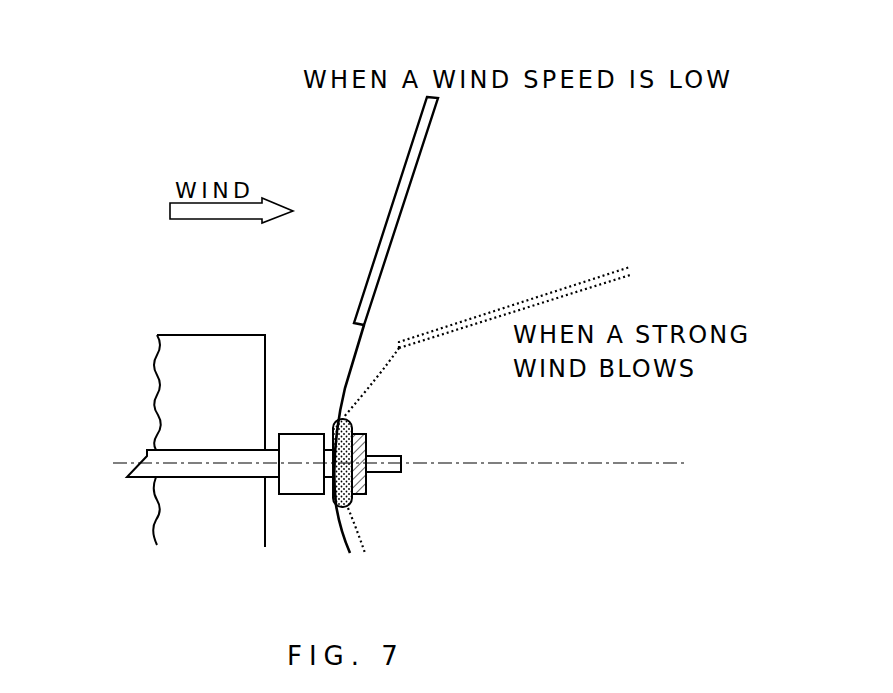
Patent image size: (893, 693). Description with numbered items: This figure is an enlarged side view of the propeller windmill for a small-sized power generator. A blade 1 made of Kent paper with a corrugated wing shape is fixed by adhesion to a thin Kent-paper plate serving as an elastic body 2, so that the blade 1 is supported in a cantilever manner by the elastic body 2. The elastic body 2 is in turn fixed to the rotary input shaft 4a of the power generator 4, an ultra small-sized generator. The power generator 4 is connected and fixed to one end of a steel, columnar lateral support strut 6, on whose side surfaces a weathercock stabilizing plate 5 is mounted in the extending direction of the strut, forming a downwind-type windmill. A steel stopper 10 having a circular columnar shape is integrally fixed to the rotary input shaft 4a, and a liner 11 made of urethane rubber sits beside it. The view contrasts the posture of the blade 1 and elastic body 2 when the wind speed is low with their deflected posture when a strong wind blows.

The blade 1 is at (532, 305).
The elastic body 2 is at (357, 407).
The power generator 4 is at (301, 480).
The rotary input shaft 4a is at (383, 466).
The weathercock stabilizing plate 5 is at (203, 517).
The lateral support strut 6 is at (153, 468).
The stopper 10 is at (362, 495).
The liner 11 is at (350, 422).